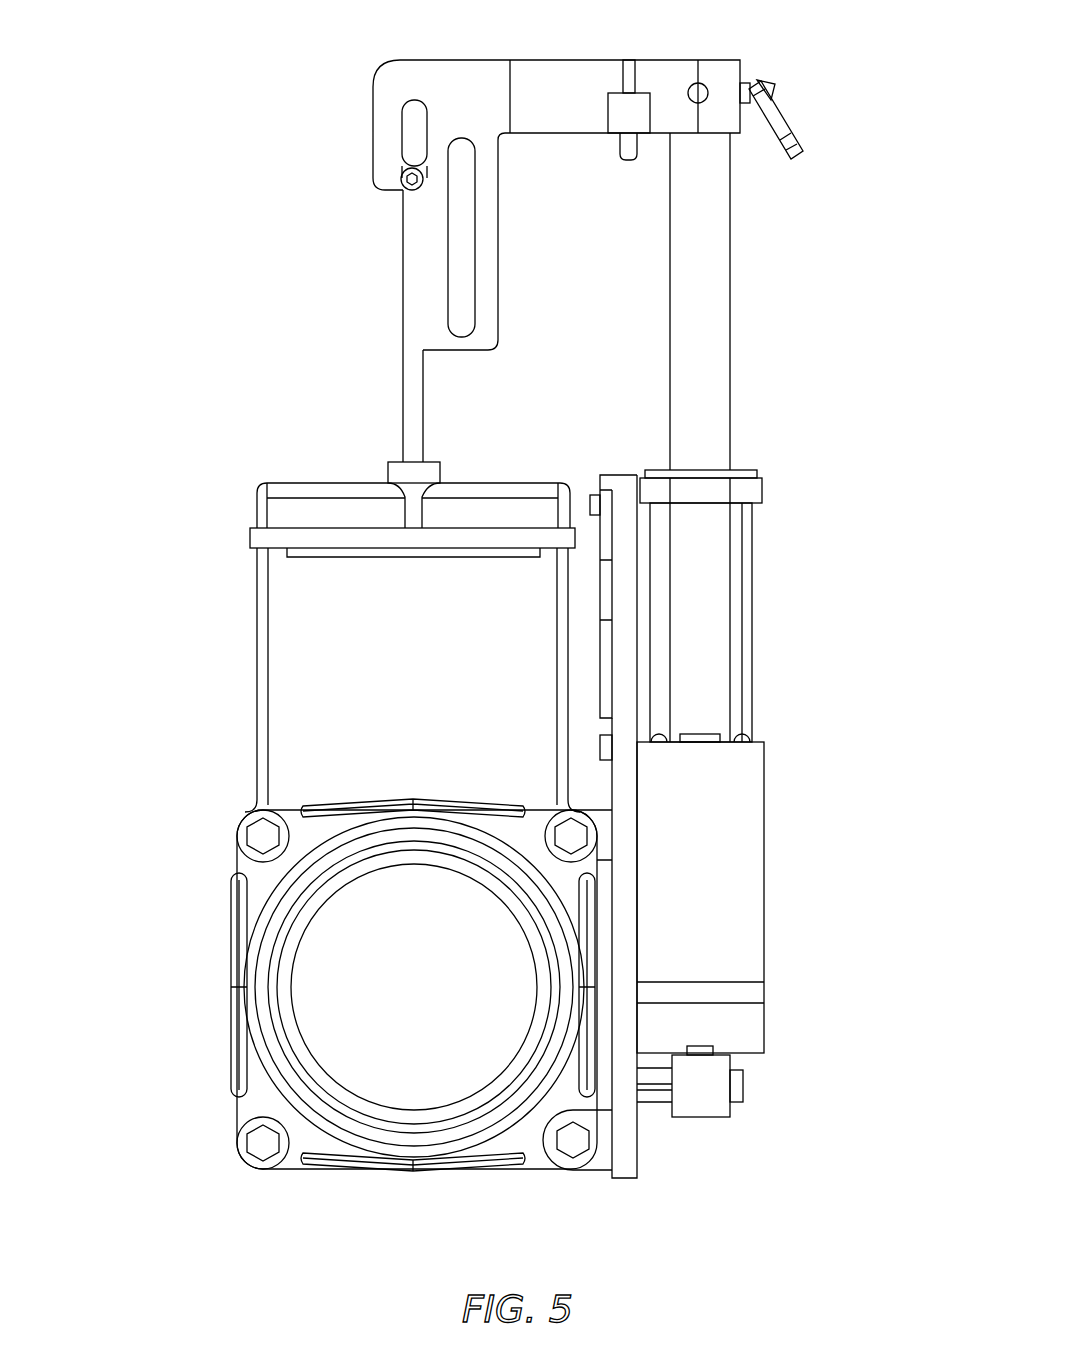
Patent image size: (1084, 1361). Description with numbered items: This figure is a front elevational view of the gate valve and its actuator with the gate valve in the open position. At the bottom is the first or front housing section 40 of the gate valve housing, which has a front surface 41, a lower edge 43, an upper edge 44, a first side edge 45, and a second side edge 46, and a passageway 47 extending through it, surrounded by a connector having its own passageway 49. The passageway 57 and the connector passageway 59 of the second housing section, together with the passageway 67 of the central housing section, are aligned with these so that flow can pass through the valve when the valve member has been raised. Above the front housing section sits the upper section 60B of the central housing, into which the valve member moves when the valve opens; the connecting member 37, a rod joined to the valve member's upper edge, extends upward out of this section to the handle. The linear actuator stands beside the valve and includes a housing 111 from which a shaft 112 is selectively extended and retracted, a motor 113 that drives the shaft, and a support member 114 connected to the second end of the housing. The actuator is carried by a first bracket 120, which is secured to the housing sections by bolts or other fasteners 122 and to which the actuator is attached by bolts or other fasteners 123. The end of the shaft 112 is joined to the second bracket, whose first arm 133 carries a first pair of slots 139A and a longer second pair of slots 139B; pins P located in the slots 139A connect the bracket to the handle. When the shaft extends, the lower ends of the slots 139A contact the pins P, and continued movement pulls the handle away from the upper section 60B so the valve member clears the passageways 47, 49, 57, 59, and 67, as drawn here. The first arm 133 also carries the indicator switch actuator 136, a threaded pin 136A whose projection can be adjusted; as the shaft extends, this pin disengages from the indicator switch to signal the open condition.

The first arm 133 is at (540, 70).
The first pair of opposed openings or slots 139A is at (404, 120).
The second pair of opposed openings or slots 139B is at (462, 240).
The pin P is at (404, 188).
The indicator switch actuator 136 is at (631, 105).
The pin 136A is at (640, 150).
The connecting member 37 is at (408, 282).
The shaft 112 is at (714, 407).
The support member 114 is at (762, 488).
The housing 111 is at (725, 612).
The first bracket 120 is at (625, 727).
The second side edge 46 is at (610, 1030).
The motor 113 is at (745, 857).
The bolts or other fasteners 123 is at (750, 1088).
The upper section 60B is at (302, 632).
The first or front housing section 40 is at (223, 1111).
The bolts or other fasteners 122 is at (590, 1150).
The front surface 41 is at (288, 1145).
The upper edge 44 is at (303, 805).
The lower edge 43 is at (430, 1172).
The first side edge 45 is at (230, 972).
The passageway 47 is at (395, 1045).
The passageway 49 is at (414, 987).
The passageway 57 is at (414, 987).
The passageway 59 is at (414, 987).
The passageway 67 is at (414, 987).